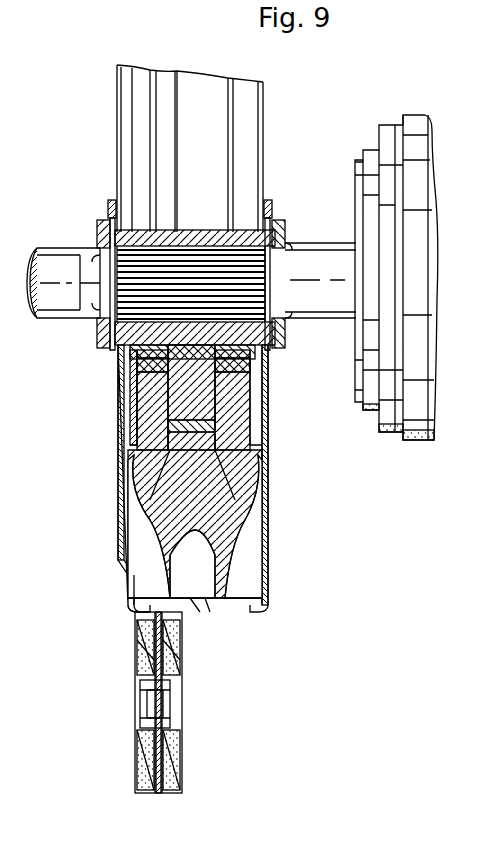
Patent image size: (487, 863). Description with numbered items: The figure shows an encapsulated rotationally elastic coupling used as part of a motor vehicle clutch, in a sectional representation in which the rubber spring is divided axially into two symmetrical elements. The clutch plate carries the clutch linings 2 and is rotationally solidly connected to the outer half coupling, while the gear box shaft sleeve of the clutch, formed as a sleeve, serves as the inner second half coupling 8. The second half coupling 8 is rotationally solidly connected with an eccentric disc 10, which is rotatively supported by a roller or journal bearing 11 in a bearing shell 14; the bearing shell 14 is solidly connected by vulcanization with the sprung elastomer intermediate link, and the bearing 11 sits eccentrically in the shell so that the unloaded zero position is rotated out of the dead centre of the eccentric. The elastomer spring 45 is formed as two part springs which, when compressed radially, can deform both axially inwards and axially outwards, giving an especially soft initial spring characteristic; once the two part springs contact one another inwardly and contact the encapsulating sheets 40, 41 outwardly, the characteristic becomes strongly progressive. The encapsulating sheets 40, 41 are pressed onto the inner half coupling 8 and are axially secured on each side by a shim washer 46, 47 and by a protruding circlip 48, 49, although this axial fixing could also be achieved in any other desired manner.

The clutch linings 2 is at (140, 650).
The second half coupling 8 is at (197, 228).
The eccentric disc 10 is at (212, 397).
The bearing 11 is at (250, 367).
The bearing shell 14 is at (155, 452).
The encapsulating sheet 40 is at (118, 480).
The encapsulating sheet 41 is at (268, 470).
The elastomer spring 45 is at (208, 612).
The shim washer 46 is at (112, 200).
The shim washer 47 is at (268, 205).
The circlip 48 is at (97, 222).
The circlip 49 is at (278, 218).